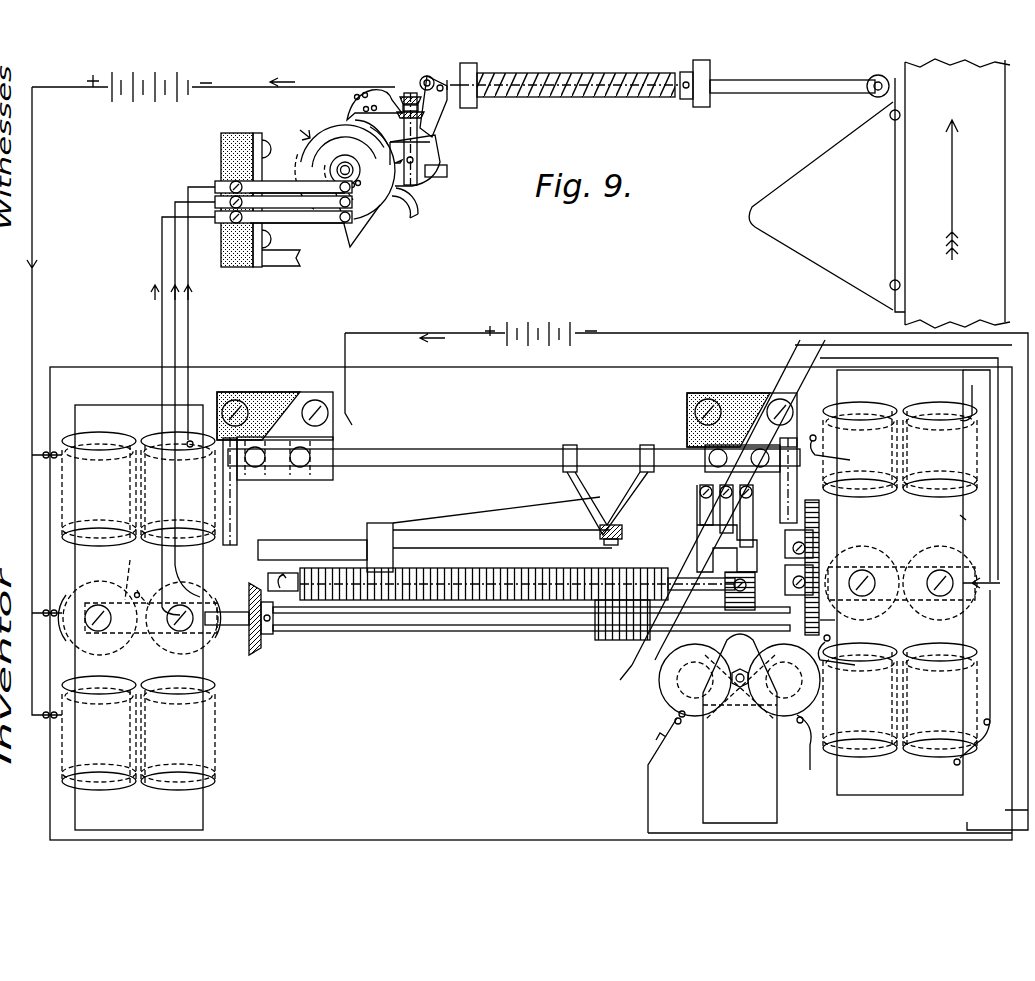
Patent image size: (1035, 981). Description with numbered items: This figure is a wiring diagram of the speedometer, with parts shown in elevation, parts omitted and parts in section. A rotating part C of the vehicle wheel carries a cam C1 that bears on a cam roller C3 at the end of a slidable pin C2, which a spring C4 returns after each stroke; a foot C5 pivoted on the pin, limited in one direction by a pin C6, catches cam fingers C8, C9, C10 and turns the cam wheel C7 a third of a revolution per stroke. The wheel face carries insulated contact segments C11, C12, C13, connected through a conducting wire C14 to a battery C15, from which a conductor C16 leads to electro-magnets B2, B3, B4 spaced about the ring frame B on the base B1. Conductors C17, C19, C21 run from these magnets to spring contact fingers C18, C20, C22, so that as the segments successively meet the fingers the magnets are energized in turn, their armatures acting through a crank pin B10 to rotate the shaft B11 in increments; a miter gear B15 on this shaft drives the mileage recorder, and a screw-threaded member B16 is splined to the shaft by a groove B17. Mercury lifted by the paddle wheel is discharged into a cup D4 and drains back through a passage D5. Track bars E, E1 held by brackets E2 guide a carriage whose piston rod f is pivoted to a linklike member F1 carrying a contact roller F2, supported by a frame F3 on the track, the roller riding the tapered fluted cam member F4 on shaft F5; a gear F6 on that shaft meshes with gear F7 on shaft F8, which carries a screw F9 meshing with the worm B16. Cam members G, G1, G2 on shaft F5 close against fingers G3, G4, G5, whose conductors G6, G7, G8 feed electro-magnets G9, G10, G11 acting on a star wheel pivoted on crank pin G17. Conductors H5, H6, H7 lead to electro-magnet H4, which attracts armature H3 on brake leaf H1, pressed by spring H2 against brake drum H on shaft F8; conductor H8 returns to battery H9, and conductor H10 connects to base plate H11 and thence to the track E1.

The base B1 is at (62, 367).
The conductor C16 is at (68, 92).
The battery C15 is at (150, 100).
The conducting wire C14 is at (430, 150).
The contact segment C13 is at (380, 212).
The contact segment C12 is at (333, 143).
The cam finger C10 is at (290, 150).
The cam finger C8 is at (357, 228).
The cam wheel C7 is at (335, 143).
The cam finger C9 is at (420, 148).
The contact segment C11 is at (420, 162).
The cup D4 is at (430, 188).
The passage D5 is at (418, 216).
The foot C5 is at (440, 112).
The pin C6 is at (436, 82).
The spring C4 is at (585, 100).
The slidable pin C2 is at (748, 93).
The cam roller C3 is at (872, 76).
The cam C1 is at (790, 185).
The rotating part C is at (950, 193).
The spring contact finger C18 is at (322, 252).
The conductor C17 is at (190, 350).
The conductor C19 is at (180, 328).
The conductor C21 is at (163, 272).
The spring contact finger C20 is at (325, 208).
The spring contact finger C22 is at (300, 235).
The conductor H10 is at (398, 332).
The battery H9 is at (530, 318).
The conductor H8 is at (1005, 812).
The ring frame B is at (115, 408).
The electro-magnet B3 is at (70, 488).
The electro-magnet B4 is at (65, 605).
The crank pin B10 is at (128, 578).
The electro-magnet B2 is at (68, 750).
The miter gear B15 is at (255, 655).
The shaft B11 is at (380, 614).
The groove B17 is at (440, 632).
The shaft F8 is at (292, 592).
The screw F9 is at (530, 600).
The screw-threaded member B16 is at (605, 640).
The bracket E2 is at (237, 492).
The track bar E is at (240, 528).
The track bar E1 is at (425, 448).
The base plate H11 is at (320, 440).
The piston rod f is at (312, 550).
The shaft F5 is at (340, 538).
The tapered fluted cam member F4 is at (465, 530).
The frame F3 is at (625, 480).
The linklike member F1 is at (600, 528).
The contact roller F2 is at (604, 543).
The conductor G6 is at (795, 345).
The conductor G7 is at (800, 340).
The conductor G8 is at (825, 340).
The spring contact finger G3 is at (700, 500).
The spring contact finger G4 is at (725, 515).
The spring contact finger G5 is at (748, 515).
The circuit making and breaking cam member G is at (705, 558).
The brake drum H is at (752, 600).
The gear F6 is at (812, 550).
The circuit making and breaking cam member G1 is at (632, 669).
The circuit making and breaking cam member G2 is at (666, 657).
The armature H3 is at (678, 683).
The electro-magnet H4 is at (683, 705).
The brake leaf H1 is at (727, 652).
The spring H2 is at (768, 802).
The conductor H7 is at (810, 760).
The conductor H6 is at (847, 654).
The conductor H5 is at (841, 452).
The gear F7 is at (835, 622).
The crank pin G17 is at (905, 575).
The electro-magnet G9 is at (966, 520).
The electro-magnet G10 is at (988, 645).
The electro-magnet G11 is at (965, 760).